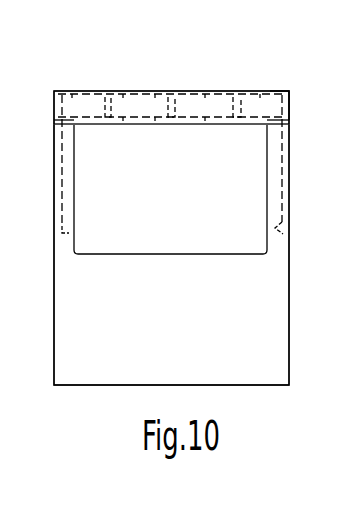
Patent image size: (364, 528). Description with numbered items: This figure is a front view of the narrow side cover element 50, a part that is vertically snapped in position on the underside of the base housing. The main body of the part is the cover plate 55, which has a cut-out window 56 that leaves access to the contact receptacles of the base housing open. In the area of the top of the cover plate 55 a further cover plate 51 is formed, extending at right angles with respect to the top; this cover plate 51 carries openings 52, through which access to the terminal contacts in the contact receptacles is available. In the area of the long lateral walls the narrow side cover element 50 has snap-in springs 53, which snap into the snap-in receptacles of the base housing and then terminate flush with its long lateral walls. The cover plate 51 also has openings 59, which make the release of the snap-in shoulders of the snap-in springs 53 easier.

The narrow side cover element 50 is at (313, 133).
The cover plate 51 is at (359, 146).
The openings 52 is at (206, 90).
The snap-in springs 53 is at (56, 167).
The cover plate 55 is at (270, 302).
The cut-out window 56 is at (85, 223).
The openings 59 is at (279, 89).